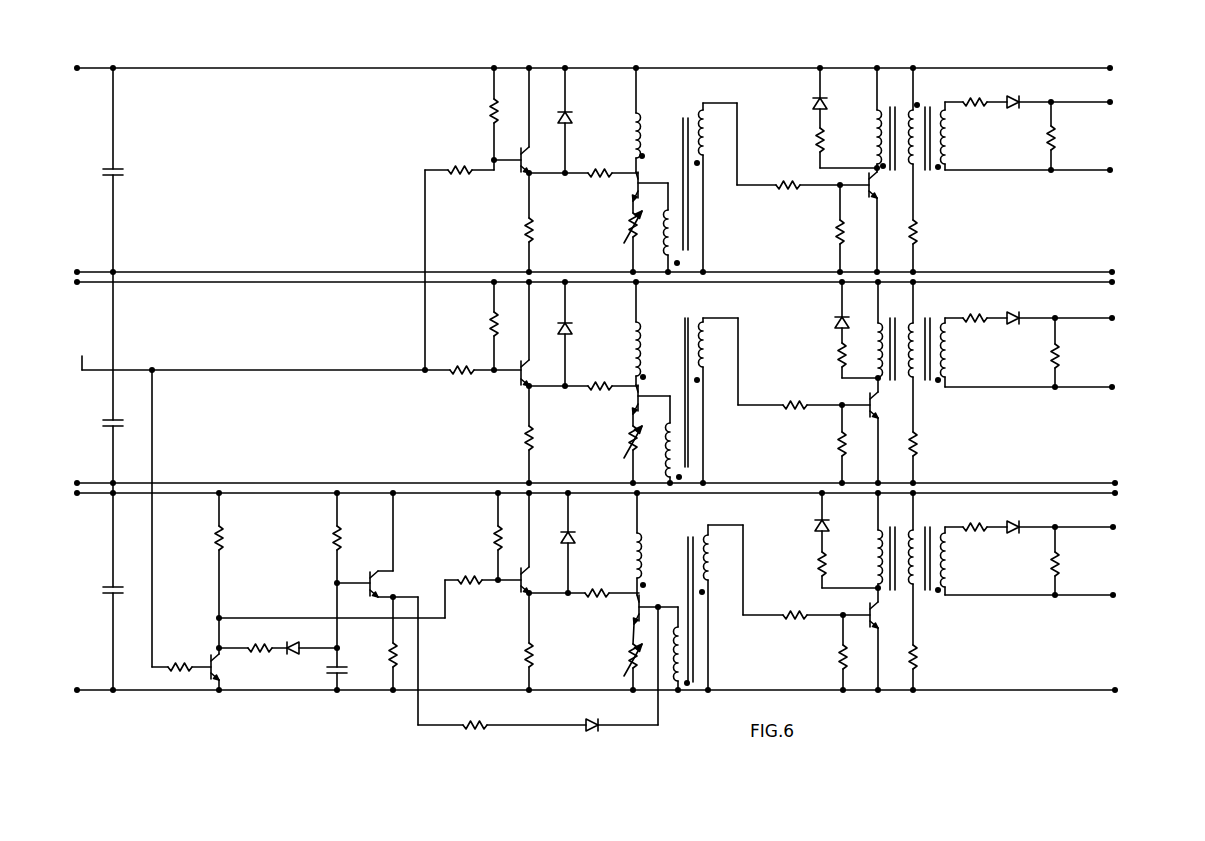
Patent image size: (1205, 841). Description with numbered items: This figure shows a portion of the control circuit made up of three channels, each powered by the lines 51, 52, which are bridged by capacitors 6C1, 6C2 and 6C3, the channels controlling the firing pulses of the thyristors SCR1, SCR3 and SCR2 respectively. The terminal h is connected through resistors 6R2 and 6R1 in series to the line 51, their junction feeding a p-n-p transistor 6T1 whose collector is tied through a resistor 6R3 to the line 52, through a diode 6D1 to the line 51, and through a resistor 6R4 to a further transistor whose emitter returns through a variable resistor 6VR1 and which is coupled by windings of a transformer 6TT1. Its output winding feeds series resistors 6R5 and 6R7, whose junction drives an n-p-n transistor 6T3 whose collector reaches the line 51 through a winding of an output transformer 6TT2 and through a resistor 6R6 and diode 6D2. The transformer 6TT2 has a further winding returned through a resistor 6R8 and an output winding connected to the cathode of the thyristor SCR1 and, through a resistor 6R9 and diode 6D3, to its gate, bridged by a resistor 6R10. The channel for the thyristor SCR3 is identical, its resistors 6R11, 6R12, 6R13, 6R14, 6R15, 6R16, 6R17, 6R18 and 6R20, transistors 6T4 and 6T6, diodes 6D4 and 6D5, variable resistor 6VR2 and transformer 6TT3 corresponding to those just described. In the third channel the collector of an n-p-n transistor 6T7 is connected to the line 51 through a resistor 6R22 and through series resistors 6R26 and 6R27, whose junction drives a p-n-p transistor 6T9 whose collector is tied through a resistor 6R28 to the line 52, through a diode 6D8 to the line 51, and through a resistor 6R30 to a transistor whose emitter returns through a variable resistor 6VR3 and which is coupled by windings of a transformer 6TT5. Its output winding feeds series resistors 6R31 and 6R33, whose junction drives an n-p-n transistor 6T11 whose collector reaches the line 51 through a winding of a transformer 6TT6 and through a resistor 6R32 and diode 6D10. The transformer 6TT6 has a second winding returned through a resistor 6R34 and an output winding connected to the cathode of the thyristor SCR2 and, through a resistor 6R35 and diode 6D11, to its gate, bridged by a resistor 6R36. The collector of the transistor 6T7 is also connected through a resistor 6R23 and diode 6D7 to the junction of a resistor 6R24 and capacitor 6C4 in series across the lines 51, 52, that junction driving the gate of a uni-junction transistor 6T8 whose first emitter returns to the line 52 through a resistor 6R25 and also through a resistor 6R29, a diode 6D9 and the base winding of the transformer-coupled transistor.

The line 51 is at (330, 67).
The line 52 is at (245, 272).
The terminal h is at (255, 352).
The capacitor 6C1 is at (135, 170).
The capacitor 6C2 is at (128, 379).
The capacitor 6C3 is at (91, 588).
The capacitor 6C4 is at (352, 670).
The resistor 6R1 is at (474, 117).
The resistor 6R2 is at (459, 160).
The resistor 6R3 is at (509, 222).
The resistor 6R4 is at (583, 162).
The resistor 6R5 is at (803, 197).
The resistor 6R6 is at (827, 148).
The resistor 6R7 is at (820, 230).
The resistor 6R8 is at (933, 247).
The resistor 6R9 is at (976, 114).
The resistor 6R10 is at (1027, 137).
The resistor 6R11 is at (473, 326).
The resistor 6R12 is at (323, 508).
The resistor 6R13 is at (554, 434).
The resistor 6R14 is at (583, 375).
The resistor 6R15 is at (804, 395).
The resistor 6R16 is at (836, 362).
The resistor 6R17 is at (819, 445).
The resistor 6R18 is at (939, 459).
The resistor 6R20 is at (1028, 354).
The resistor 6R22 is at (243, 572).
The resistor 6R23 is at (253, 638).
The resistor 6R24 is at (360, 569).
The resistor 6R25 is at (399, 650).
The resistor 6R26 is at (370, 587).
The resistor 6R27 is at (477, 535).
The resistor 6R28 is at (554, 641).
The resistor 6R29 is at (489, 663).
The resistor 6R30 is at (584, 604).
The resistor 6R31 is at (806, 605).
The resistor 6R32 is at (826, 571).
The resistor 6R33 is at (817, 654).
The resistor 6R34 is at (958, 503).
The resistor 6R35 is at (976, 540).
The resistor 6R36 is at (1029, 562).
The variable resistor 6VR1 is at (612, 238).
The variable resistor 6VR2 is at (618, 450).
The variable resistor 6VR3 is at (611, 658).
The diode 6D1 is at (585, 120).
The diode 6D2 is at (800, 96).
The diode 6D3 is at (1056, 91).
The diode 6D4 is at (585, 334).
The diode 6D5 is at (822, 311).
The diode 6D7 is at (305, 661).
The diode 6D8 is at (589, 543).
The diode 6D9 is at (619, 669).
The diode 6D10 is at (800, 521).
The diode 6D11 is at (1058, 412).
The p-n-p transistor 6T1 is at (529, 119).
The n-p-n transistor 6T3 is at (890, 220).
The transistor 6T4 is at (529, 332).
The transistor 6T6 is at (891, 432).
The n-p-n transistor 6T7 is at (233, 673).
The transistor 6T8 is at (366, 545).
The p-n-p transistor 6T9 is at (543, 541).
The n-p-n transistor 6T11 is at (896, 640).
The transformer 6TT1 is at (685, 170).
The output transformer 6TT2 is at (916, 142).
The transformer 6TT3 is at (686, 382).
The transformer 6TT5 is at (689, 591).
The transformer 6TT6 is at (917, 462).
The thyristor SCR1 is at (1132, 136).
The thyristor SCR2 is at (1135, 561).
The thyristor SCR3 is at (1135, 352).